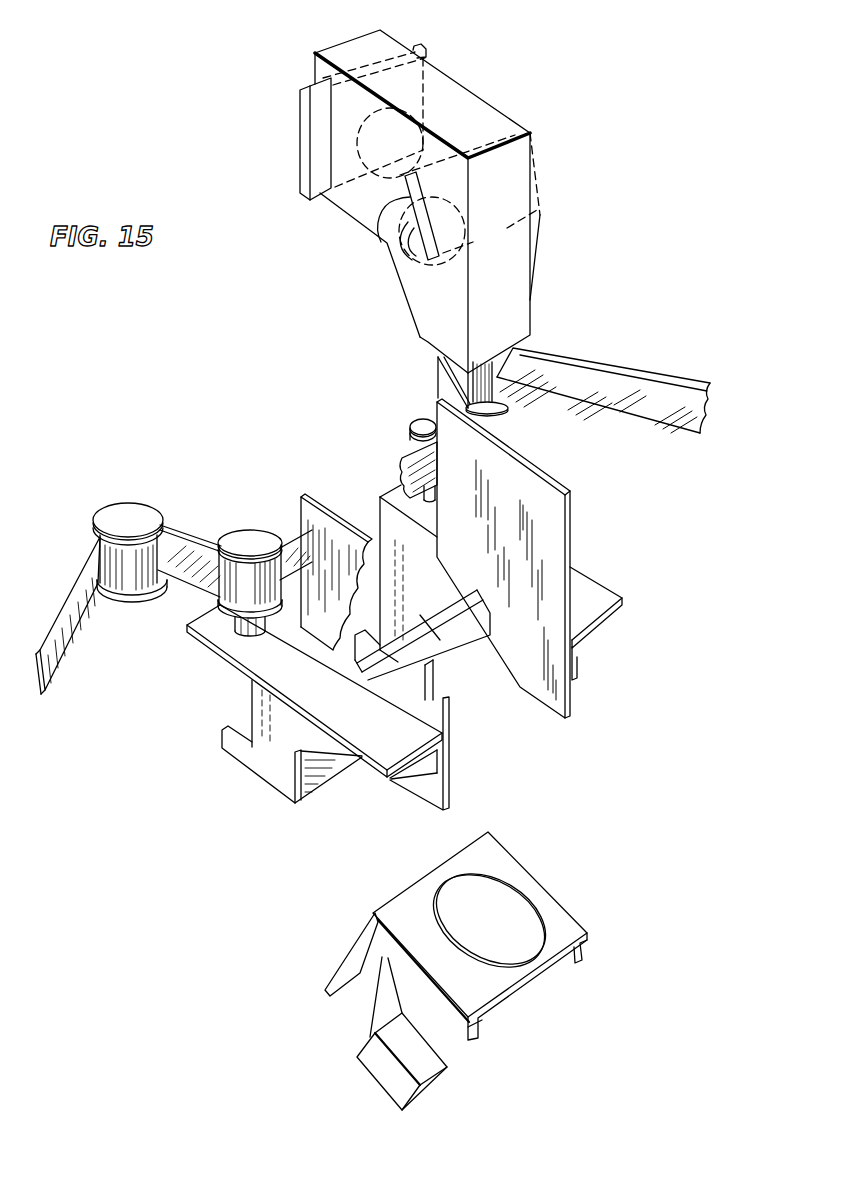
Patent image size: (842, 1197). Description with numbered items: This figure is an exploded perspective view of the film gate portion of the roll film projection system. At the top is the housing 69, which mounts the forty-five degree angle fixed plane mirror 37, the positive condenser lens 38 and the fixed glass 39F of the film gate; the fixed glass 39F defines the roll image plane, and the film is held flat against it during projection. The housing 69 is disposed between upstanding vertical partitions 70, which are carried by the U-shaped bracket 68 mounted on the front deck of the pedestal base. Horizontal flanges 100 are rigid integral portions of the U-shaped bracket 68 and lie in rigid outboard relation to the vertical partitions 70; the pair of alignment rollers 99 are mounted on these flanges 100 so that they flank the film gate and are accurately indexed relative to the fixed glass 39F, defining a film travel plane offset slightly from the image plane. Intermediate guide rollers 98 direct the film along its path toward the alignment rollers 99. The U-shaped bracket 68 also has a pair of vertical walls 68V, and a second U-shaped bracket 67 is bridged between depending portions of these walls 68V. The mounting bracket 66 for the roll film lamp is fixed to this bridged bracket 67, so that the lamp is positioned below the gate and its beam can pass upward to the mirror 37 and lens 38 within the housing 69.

The housing 69 is at (518, 116).
The fixed glass 39F is at (306, 180).
The positive condenser lens 38 is at (360, 165).
The plane mirror 37 is at (376, 238).
The alignment rollers 99 is at (423, 419).
The intermediate guide rollers 98 is at (120, 503).
The vertical partitions 70 is at (560, 486).
The vertical walls 68V is at (386, 518).
The U-shaped bracket 68 is at (266, 773).
The U-shaped bracket 67 is at (418, 630).
The horizontal flanges 100 is at (372, 726).
The mounting bracket 66 is at (550, 898).